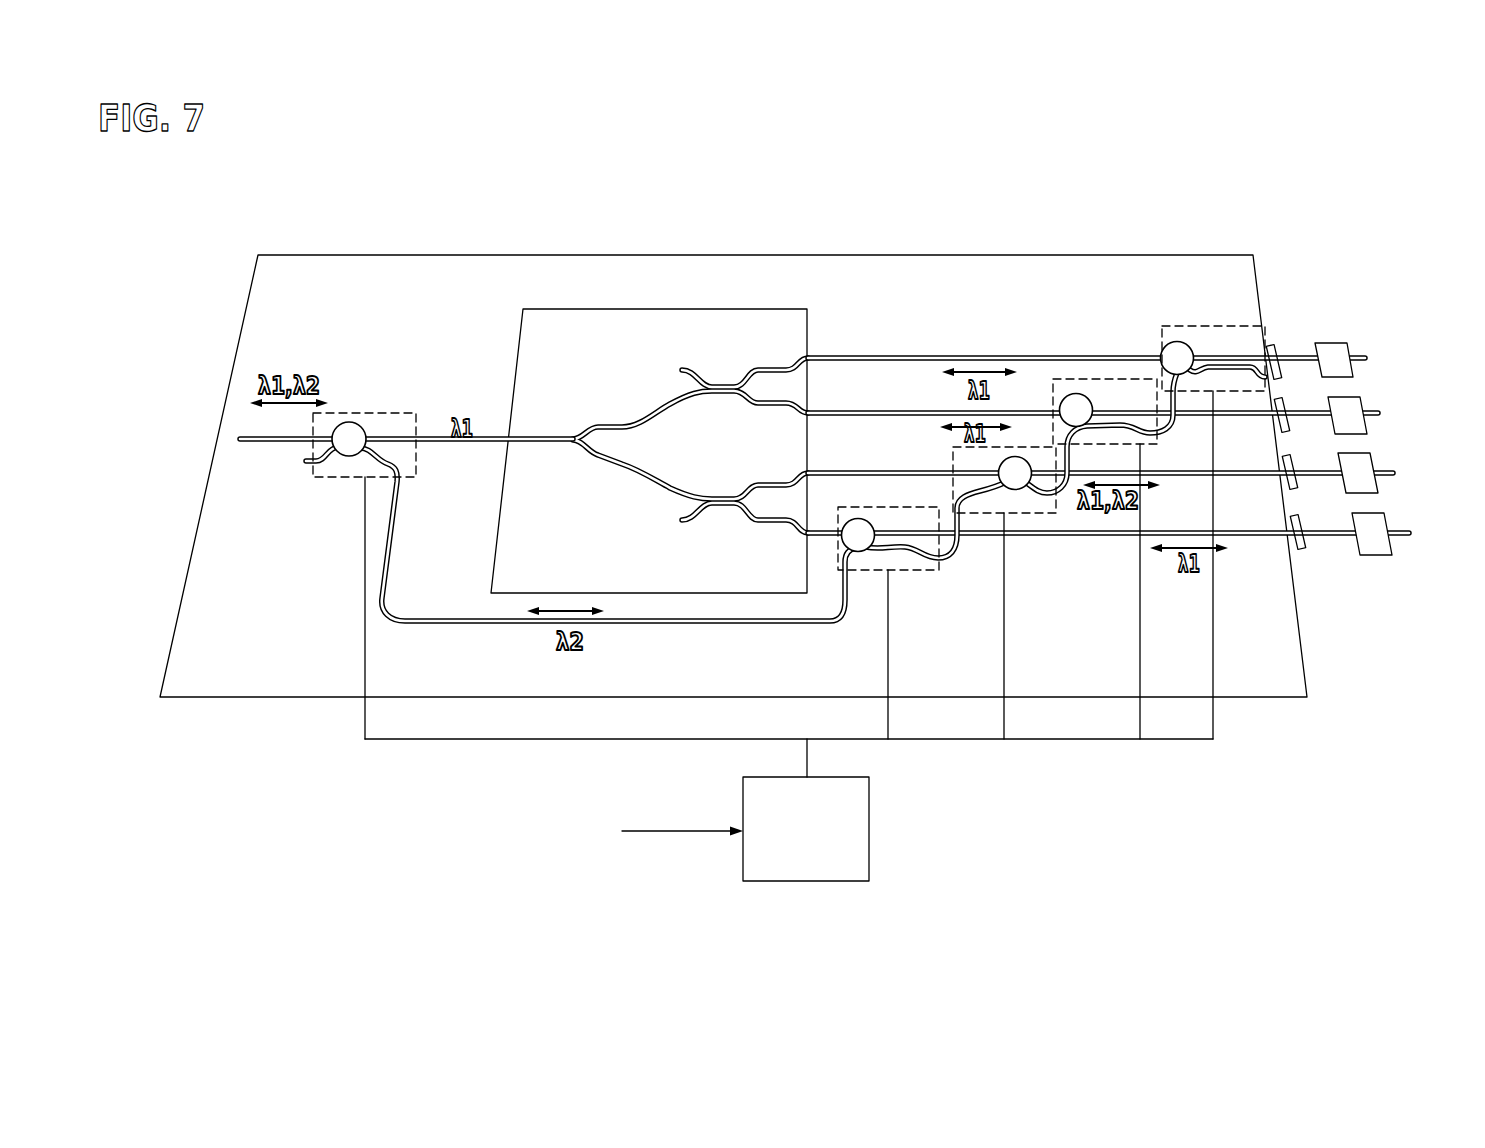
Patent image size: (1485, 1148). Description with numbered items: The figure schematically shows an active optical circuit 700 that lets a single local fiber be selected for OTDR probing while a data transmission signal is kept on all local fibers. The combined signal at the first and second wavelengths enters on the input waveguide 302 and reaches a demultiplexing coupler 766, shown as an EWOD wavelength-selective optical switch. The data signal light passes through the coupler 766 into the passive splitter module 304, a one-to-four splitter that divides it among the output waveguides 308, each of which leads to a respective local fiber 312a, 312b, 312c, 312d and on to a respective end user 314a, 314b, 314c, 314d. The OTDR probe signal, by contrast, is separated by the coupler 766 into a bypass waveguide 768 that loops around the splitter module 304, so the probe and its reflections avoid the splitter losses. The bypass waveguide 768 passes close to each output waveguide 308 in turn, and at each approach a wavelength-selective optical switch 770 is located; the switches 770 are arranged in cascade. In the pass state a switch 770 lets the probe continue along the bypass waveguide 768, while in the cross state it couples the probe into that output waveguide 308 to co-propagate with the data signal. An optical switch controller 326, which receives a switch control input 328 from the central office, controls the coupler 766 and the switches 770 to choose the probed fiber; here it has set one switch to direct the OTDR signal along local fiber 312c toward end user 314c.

The optical circuit 700 is at (656, 175).
The splitter module 304 is at (560, 310).
The input waveguide 302 is at (285, 445).
The output waveguides 308 is at (1077, 567).
The bypass waveguide 768 is at (496, 627).
The demultiplexing coupler 766 is at (379, 412).
The wavelength-selective optical switches 770 is at (907, 573).
The local fiber 312a is at (1292, 350).
The local fiber 312b is at (1306, 408).
The local fiber 312c is at (1332, 479).
The local fiber 312d is at (1343, 539).
The end user 314a is at (1346, 340).
The end user 314b is at (1358, 396).
The end user 314c is at (1372, 456).
The end user 314d is at (1390, 514).
The optical switch controller 326 is at (869, 822).
The switch control input 328 is at (711, 828).